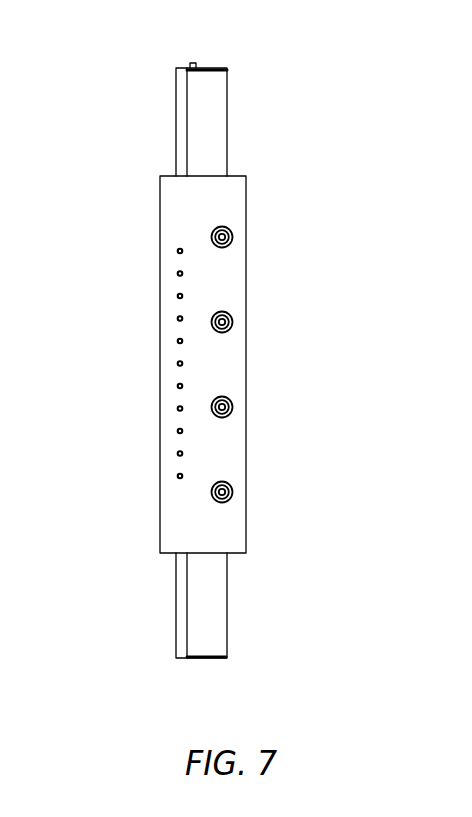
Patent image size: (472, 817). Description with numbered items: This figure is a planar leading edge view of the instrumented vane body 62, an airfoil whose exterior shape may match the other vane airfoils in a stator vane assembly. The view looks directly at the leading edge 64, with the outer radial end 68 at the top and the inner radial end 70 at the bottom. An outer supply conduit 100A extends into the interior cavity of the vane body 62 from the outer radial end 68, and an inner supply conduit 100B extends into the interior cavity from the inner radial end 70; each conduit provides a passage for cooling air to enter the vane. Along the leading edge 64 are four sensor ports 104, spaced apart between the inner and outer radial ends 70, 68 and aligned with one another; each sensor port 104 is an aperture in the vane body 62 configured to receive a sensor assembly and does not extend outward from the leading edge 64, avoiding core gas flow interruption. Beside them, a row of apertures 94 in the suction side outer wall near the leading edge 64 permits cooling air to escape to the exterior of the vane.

The instrumented vane body 62 is at (112, 78).
The leading edge 64 is at (192, 497).
The outer radial end 68 is at (245, 97).
The inner radial end 70 is at (245, 575).
The apertures 94 is at (178, 432).
The sensor ports 104 is at (231, 240).
The outer supply conduit 100A is at (242, 123).
The inner supply conduit 100B is at (222, 672).